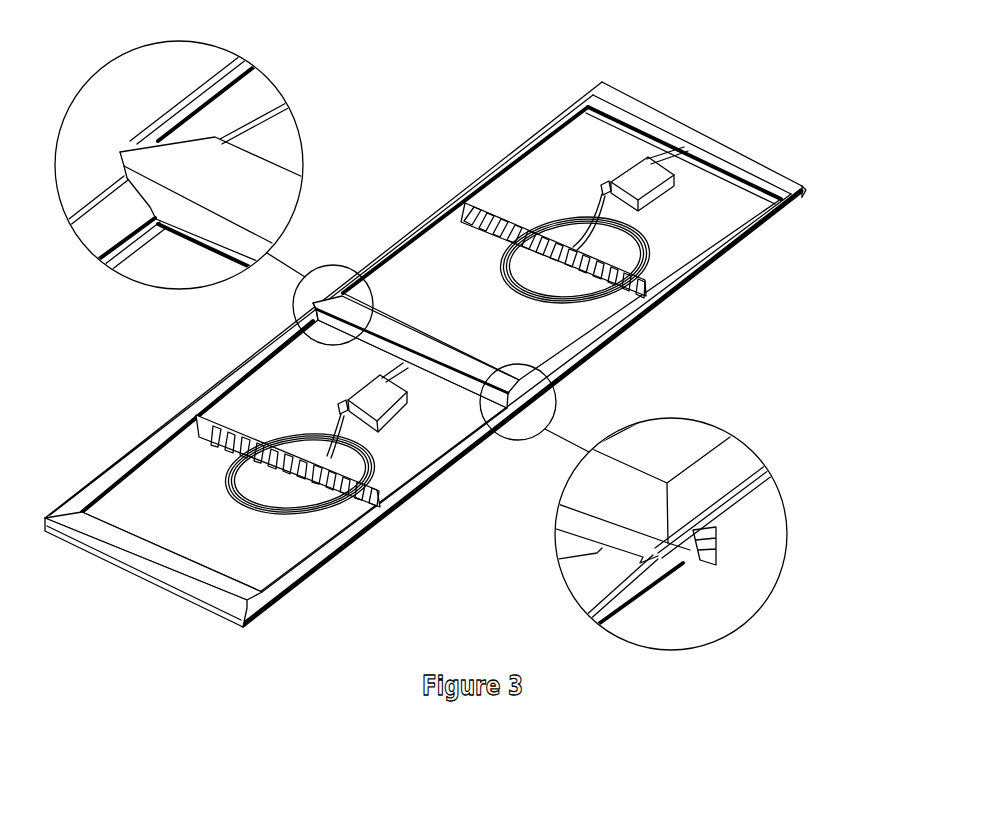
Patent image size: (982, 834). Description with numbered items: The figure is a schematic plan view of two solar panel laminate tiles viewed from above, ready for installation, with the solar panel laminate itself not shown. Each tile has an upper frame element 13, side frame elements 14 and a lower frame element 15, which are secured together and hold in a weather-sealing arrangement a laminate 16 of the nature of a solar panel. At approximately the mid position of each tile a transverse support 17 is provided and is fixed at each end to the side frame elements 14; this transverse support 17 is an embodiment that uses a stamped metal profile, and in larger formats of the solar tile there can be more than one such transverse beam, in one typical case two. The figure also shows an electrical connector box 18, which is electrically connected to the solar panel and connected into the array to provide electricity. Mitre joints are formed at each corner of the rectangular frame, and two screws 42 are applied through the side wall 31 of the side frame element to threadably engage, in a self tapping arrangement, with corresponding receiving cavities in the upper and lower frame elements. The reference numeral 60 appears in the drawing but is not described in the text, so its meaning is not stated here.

The upper frame element 13 is at (188, 240).
The side frame elements 14 is at (210, 108).
The lower frame element 15 is at (394, 331).
The laminate 16 is at (570, 160).
The transverse support 17 is at (603, 298).
The electrical connector box 18 is at (668, 203).
The side wall 31 is at (729, 516).
The screws 42 is at (663, 547).
The corner piece 60 is at (793, 203).